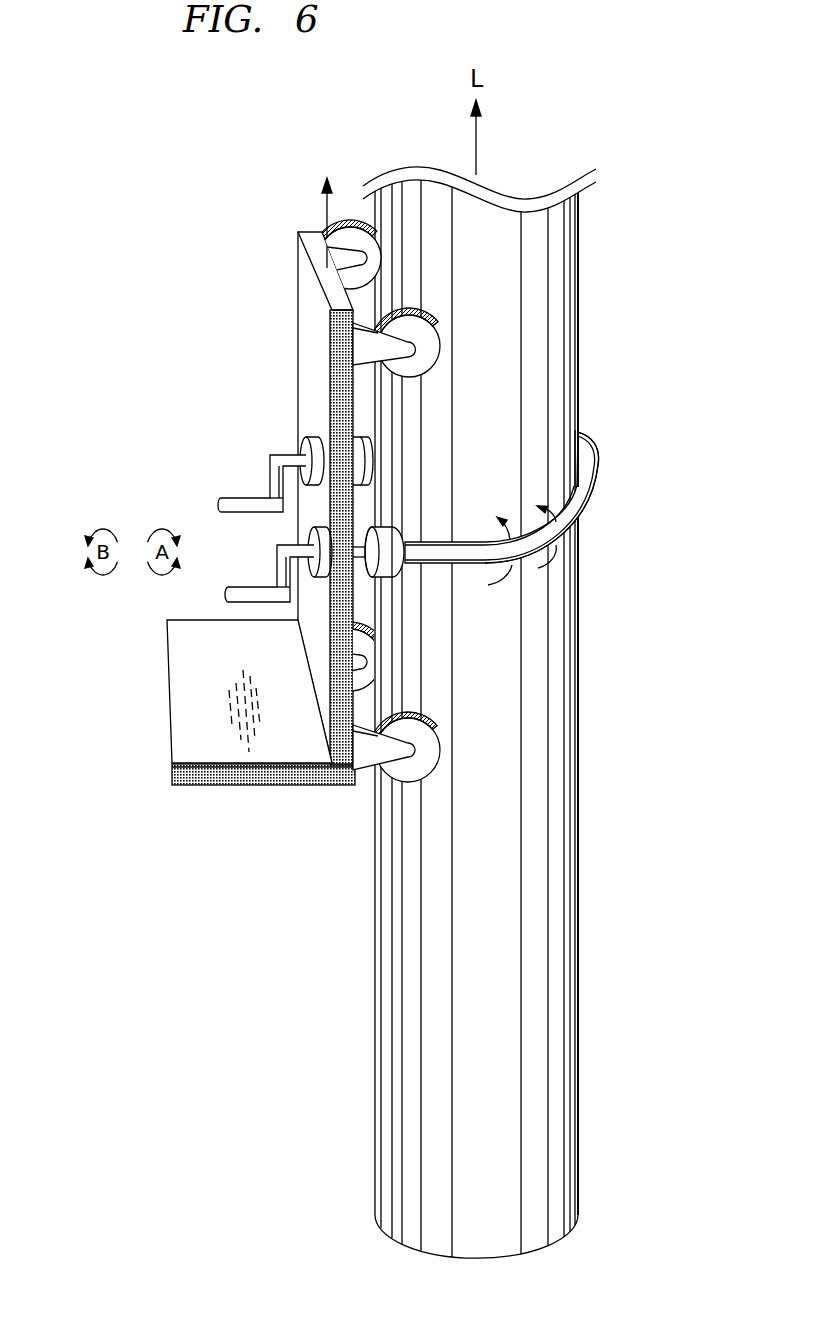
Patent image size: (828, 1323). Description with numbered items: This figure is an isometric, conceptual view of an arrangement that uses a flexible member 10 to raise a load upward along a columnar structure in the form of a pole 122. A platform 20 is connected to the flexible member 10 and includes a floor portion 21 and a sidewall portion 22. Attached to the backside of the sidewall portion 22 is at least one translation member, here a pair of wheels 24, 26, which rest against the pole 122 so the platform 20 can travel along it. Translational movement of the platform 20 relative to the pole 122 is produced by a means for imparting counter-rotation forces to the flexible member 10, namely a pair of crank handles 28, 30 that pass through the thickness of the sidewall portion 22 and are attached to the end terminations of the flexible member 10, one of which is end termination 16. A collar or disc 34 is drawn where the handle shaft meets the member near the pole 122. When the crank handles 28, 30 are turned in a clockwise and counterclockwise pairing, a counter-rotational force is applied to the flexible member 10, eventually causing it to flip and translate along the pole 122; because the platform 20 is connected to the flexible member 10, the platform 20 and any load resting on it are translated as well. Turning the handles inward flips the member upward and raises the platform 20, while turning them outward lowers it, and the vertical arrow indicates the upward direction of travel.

The flexible member 10 is at (582, 497).
The end termination 16 is at (530, 507).
The platform 20 is at (243, 780).
The floor portion 21 is at (185, 641).
The sidewall portion 22 is at (310, 312).
The wheel 24 is at (370, 261).
The wheel 26 is at (365, 682).
The crank handle 28 is at (276, 600).
The crank handle 30 is at (273, 463).
The collar disc 34 is at (383, 578).
The pole 122 is at (558, 285).